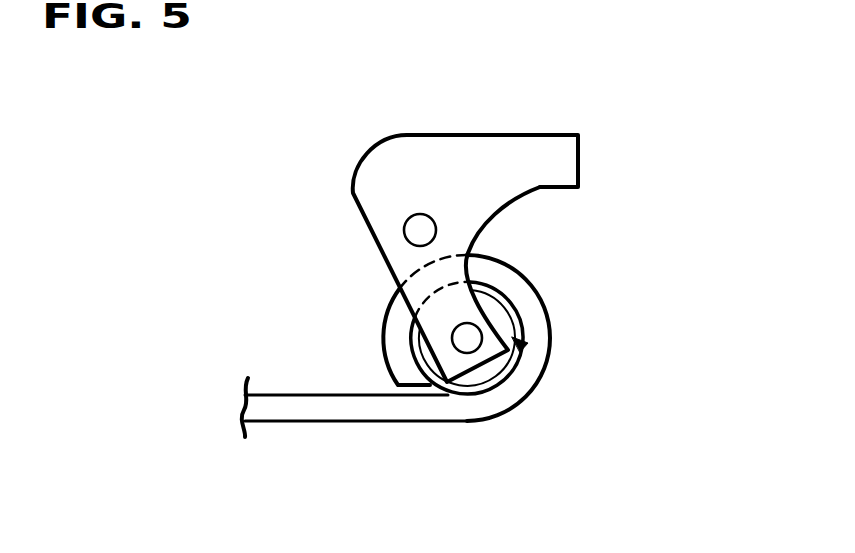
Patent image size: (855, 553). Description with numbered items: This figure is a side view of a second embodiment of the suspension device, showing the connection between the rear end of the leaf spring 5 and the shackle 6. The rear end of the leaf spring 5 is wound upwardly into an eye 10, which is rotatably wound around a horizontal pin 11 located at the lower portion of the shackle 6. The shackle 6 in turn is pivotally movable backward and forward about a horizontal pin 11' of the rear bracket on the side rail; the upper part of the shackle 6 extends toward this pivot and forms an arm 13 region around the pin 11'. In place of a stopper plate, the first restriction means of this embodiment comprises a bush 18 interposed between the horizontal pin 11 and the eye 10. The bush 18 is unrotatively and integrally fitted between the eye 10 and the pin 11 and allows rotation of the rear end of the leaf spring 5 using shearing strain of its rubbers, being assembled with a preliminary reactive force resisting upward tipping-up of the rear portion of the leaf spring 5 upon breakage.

The leaf spring 5 is at (297, 412).
The shackle 6 is at (405, 260).
The eye 10 is at (518, 287).
The horizontal pin 11 is at (540, 327).
The horizontal pin 11' is at (351, 217).
The arm 13 is at (546, 155).
The bush 18 is at (527, 350).